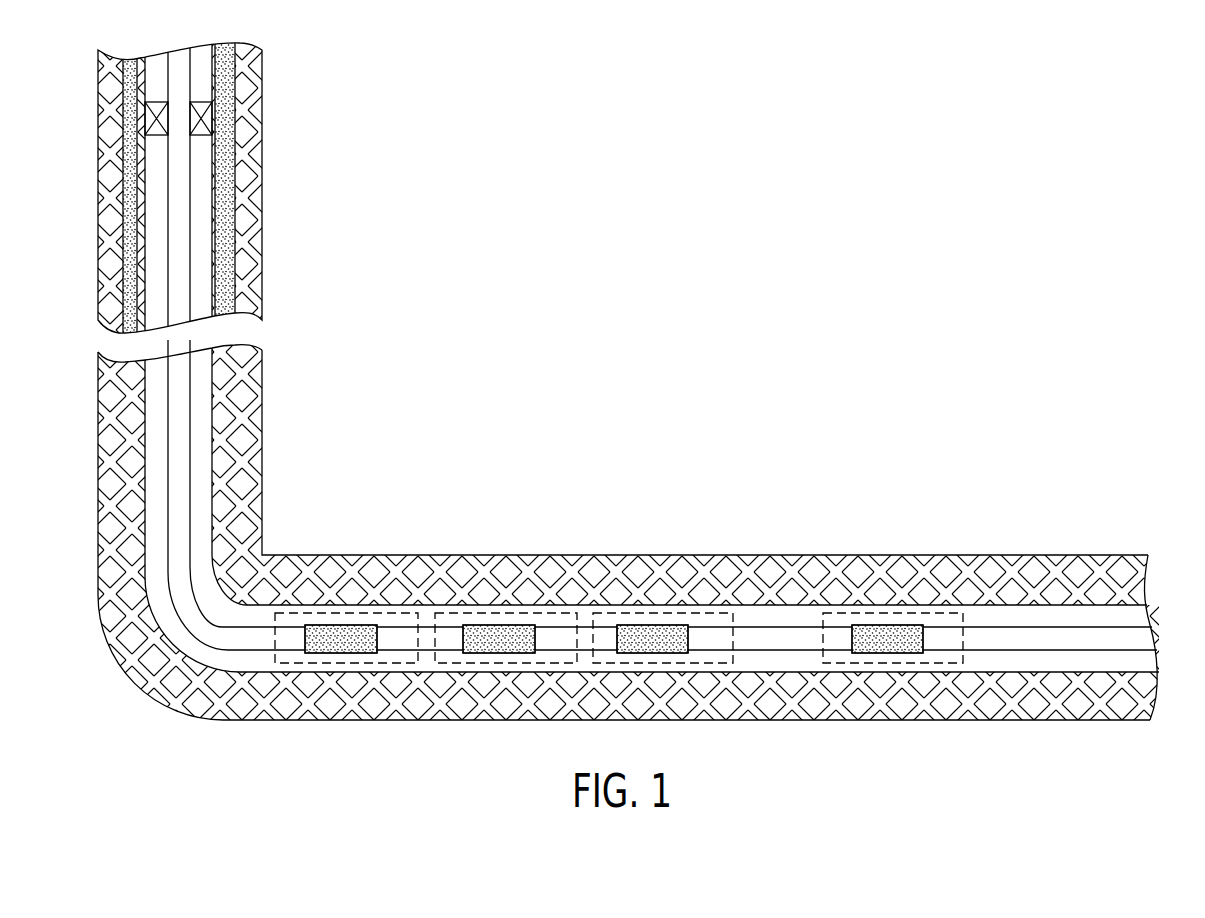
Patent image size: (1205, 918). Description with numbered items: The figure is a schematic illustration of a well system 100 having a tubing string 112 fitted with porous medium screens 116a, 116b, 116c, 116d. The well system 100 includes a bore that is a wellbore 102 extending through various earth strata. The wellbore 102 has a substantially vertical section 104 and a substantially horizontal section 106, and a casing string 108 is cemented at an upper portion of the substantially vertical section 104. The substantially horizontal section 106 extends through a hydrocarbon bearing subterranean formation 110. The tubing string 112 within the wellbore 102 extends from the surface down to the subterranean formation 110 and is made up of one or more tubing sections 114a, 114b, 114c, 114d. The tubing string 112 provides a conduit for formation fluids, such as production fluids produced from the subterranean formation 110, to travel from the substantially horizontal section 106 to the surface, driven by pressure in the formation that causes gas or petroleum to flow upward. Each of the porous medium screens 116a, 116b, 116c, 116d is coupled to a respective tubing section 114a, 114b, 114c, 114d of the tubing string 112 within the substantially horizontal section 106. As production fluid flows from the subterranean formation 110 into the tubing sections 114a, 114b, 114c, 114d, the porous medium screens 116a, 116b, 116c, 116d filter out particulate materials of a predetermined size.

The well system 100 is at (458, 171).
The wellbore 102 is at (213, 448).
The substantially vertical section 104 is at (213, 397).
The substantially horizontal section 106 is at (423, 605).
The casing string 108 is at (218, 203).
The subterranean formation 110 is at (797, 567).
The tubing string 112 is at (178, 512).
The tubing section 114a is at (404, 612).
The tubing section 114b is at (565, 612).
The tubing section 114c is at (723, 612).
The tubing section 114d is at (952, 610).
The porous medium screen 116a is at (332, 625).
The porous medium screen 116b is at (492, 625).
The porous medium screen 116c is at (650, 625).
The porous medium screen 116d is at (885, 625).